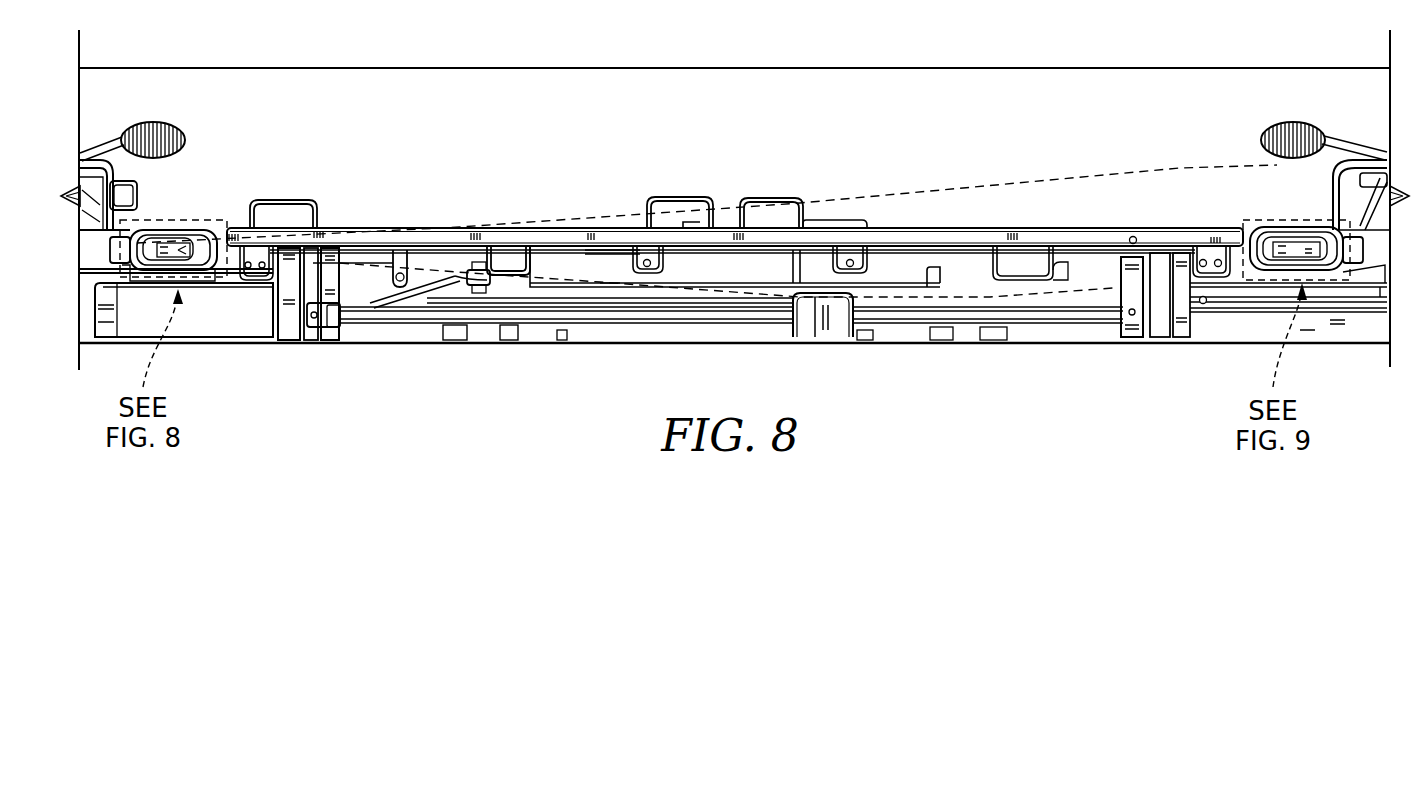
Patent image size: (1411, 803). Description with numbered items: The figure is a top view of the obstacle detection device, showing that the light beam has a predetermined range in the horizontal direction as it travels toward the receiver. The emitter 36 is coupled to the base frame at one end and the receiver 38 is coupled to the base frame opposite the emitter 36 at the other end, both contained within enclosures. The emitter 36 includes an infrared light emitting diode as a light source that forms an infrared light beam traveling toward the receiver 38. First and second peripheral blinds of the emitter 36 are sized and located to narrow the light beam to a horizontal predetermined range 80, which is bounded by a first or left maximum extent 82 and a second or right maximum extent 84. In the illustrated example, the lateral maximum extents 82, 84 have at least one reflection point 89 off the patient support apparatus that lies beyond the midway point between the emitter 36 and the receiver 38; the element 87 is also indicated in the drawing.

The emitter 36 is at (197, 209).
The receiver 38 is at (1273, 200).
The horizontal predetermined range 80 is at (370, 239).
The first maximum extent 82 is at (520, 221).
The second maximum extent 84 is at (528, 286).
The mounting plate 87 is at (606, 266).
The reflection point 89 is at (899, 307).